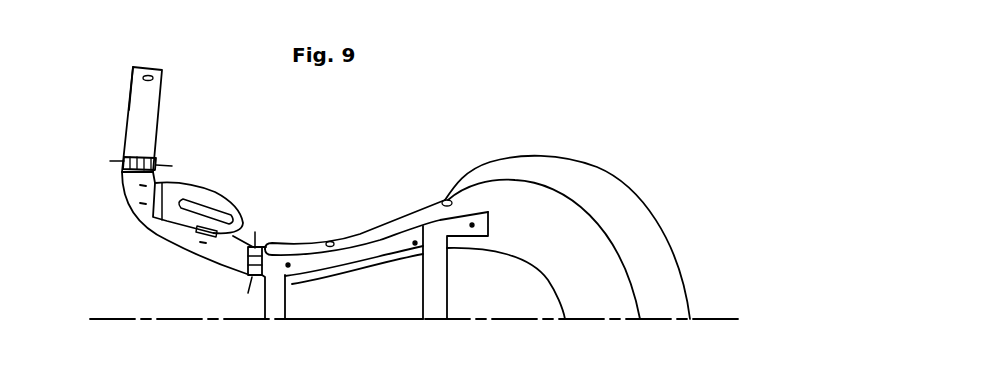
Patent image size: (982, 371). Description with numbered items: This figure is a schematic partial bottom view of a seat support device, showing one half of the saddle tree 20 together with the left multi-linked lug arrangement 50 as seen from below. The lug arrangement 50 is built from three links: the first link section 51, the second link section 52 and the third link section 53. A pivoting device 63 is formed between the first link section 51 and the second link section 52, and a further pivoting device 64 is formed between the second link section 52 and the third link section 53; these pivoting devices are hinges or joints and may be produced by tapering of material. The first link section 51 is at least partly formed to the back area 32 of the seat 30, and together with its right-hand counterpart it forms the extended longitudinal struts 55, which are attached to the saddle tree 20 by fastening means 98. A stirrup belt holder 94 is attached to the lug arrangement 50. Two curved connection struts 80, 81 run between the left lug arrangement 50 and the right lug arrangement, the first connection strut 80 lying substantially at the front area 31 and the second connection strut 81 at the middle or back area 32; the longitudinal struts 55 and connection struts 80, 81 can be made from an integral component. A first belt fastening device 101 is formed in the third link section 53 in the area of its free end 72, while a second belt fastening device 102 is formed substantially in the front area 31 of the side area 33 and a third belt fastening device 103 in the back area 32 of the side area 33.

The saddle tree 20 is at (423, 106).
The seat 30 is at (484, 298).
The front area 31 is at (298, 306).
The back area 32 is at (540, 297).
The side area 33 is at (386, 222).
The left multi-linked lug arrangement 50 is at (70, 149).
The first link section 51 is at (268, 246).
The second link section 52 is at (221, 263).
The third link section 53 is at (141, 122).
The longitudinal struts 55 is at (383, 250).
The pivoting device 63 is at (257, 243).
The pivoting device 64 is at (122, 160).
The free end 72 is at (133, 82).
The first connection strut 80 is at (278, 300).
The second connection strut 81 is at (432, 303).
The stirrup belt holder 94 is at (199, 183).
The fastening means 98 is at (288, 266).
The first belt fastening device 101 is at (153, 78).
The second belt fastening device 102 is at (330, 242).
The third belt fastening device 103 is at (447, 200).